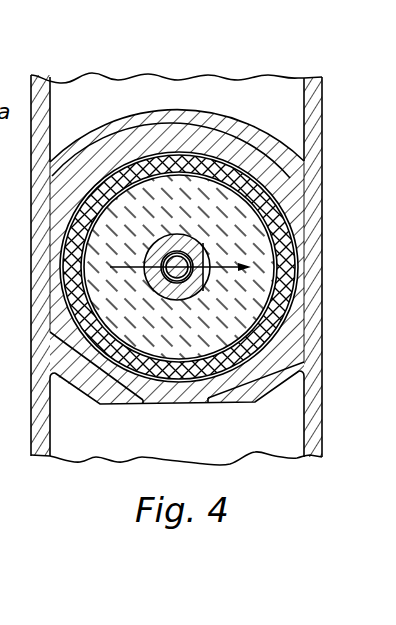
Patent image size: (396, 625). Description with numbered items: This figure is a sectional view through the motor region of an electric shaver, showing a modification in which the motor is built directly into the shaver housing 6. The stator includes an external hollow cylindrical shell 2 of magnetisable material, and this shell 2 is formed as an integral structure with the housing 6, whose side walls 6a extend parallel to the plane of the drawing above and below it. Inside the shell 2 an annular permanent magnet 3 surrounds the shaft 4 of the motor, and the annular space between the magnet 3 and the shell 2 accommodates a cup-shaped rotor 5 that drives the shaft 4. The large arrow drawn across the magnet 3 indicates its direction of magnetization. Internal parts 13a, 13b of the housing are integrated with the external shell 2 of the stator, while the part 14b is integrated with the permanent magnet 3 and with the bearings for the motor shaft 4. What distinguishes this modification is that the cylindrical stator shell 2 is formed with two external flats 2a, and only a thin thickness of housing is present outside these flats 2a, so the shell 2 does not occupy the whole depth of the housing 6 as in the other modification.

The external hollow cylindrical shell 2 is at (220, 145).
The external flats 2a is at (304, 290).
The annular permanent magnet 3 is at (258, 253).
The shaft 4 is at (182, 276).
The cup-shaped rotor 5 is at (250, 193).
The shaver housing 6 is at (330, 160).
The side walls 6a is at (314, 104).
The internal part 13a is at (173, 118).
The internal part 13b is at (95, 398).
The part 14b is at (162, 242).